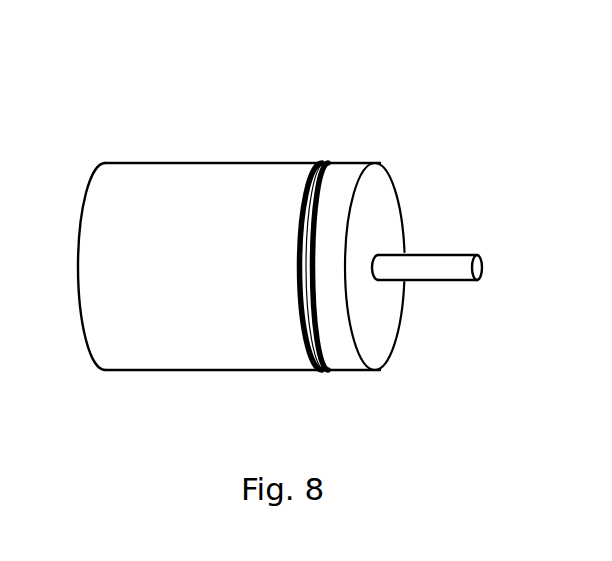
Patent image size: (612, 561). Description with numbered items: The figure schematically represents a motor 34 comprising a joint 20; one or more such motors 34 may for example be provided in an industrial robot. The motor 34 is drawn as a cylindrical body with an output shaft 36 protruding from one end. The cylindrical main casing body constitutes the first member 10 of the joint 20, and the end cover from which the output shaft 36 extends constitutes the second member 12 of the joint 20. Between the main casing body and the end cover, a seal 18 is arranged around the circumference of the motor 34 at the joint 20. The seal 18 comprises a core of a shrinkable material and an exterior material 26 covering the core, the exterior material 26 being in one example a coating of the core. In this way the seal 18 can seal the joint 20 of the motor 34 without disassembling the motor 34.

The first member 10 is at (206, 276).
The second member 12 is at (357, 164).
The seal 18 is at (323, 166).
The joint 20 is at (181, 106).
The exterior material 26 is at (325, 367).
The motor 34 is at (86, 84).
The output shaft 36 is at (433, 266).